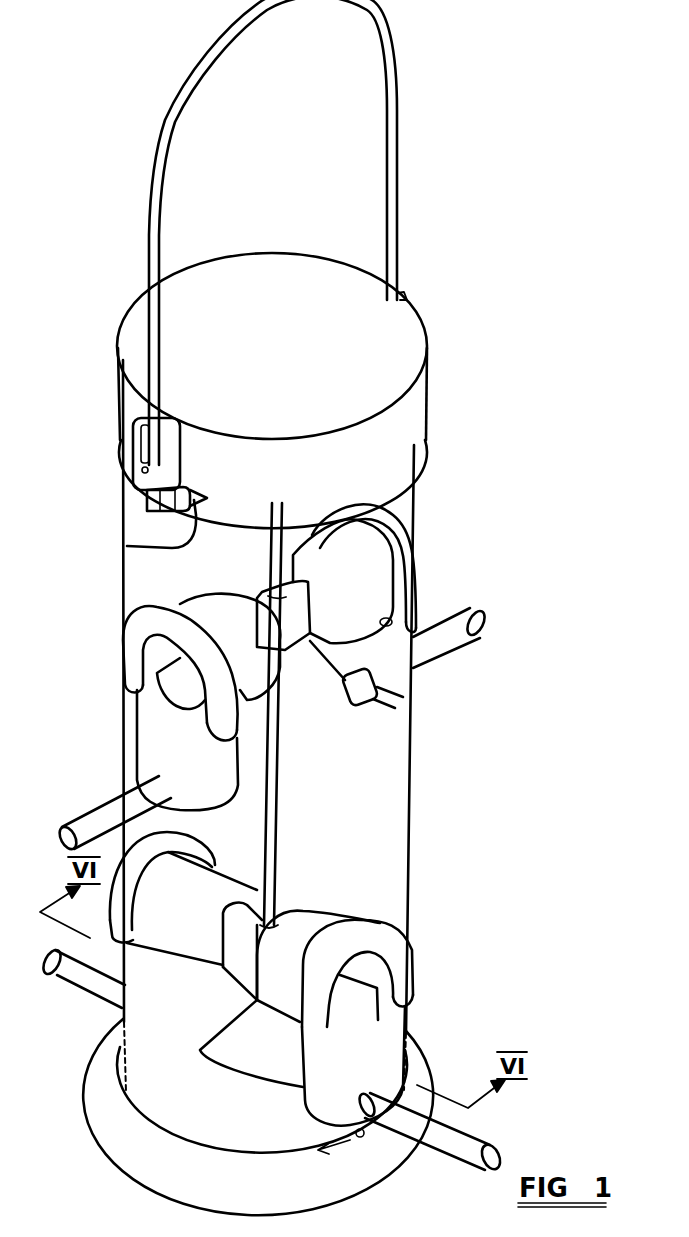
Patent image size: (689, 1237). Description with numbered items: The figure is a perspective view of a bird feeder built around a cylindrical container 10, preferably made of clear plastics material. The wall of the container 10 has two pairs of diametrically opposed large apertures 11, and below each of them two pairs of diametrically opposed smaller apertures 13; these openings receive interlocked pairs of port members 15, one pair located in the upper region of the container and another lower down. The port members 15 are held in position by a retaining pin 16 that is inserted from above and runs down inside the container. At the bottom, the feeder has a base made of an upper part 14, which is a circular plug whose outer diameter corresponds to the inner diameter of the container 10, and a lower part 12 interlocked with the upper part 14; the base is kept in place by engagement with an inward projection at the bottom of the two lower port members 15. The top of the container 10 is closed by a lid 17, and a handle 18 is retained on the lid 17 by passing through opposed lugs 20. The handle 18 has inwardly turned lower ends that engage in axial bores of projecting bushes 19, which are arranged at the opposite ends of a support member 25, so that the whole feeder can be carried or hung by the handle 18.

The cylindrical container 10 is at (395, 795).
The large apertures 11 is at (416, 633).
The lower part of base 12 is at (430, 1057).
The smaller apertures 13 is at (408, 697).
The upper part of base 14 is at (188, 1108).
The port members 15 is at (163, 732).
The retaining pin 16 is at (268, 782).
The lid 17 is at (408, 408).
The handle 18 is at (397, 183).
The projecting bushes 19 is at (150, 503).
The lugs 20 is at (148, 474).
The support member 25 is at (127, 546).